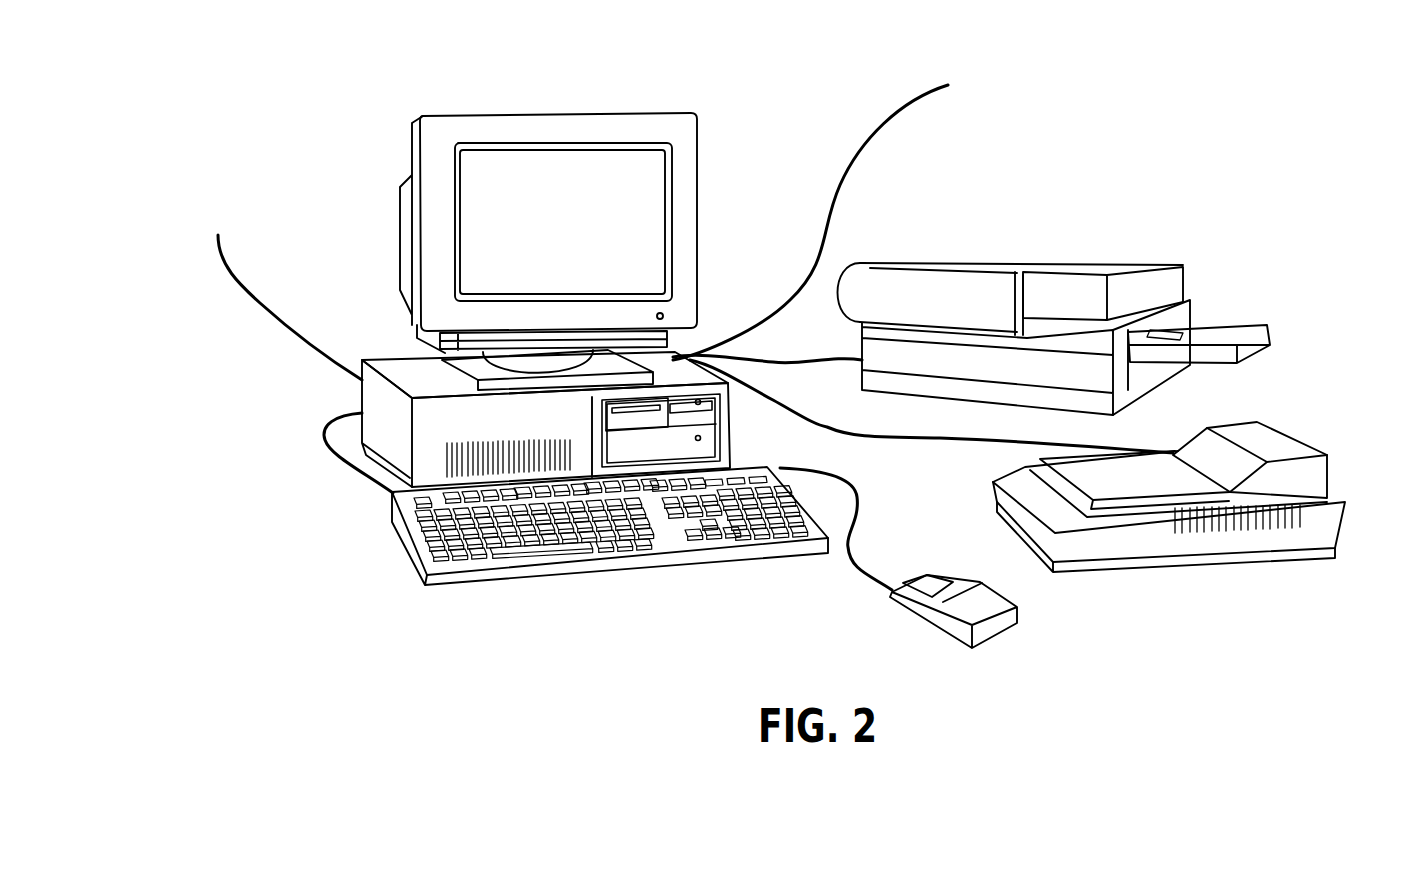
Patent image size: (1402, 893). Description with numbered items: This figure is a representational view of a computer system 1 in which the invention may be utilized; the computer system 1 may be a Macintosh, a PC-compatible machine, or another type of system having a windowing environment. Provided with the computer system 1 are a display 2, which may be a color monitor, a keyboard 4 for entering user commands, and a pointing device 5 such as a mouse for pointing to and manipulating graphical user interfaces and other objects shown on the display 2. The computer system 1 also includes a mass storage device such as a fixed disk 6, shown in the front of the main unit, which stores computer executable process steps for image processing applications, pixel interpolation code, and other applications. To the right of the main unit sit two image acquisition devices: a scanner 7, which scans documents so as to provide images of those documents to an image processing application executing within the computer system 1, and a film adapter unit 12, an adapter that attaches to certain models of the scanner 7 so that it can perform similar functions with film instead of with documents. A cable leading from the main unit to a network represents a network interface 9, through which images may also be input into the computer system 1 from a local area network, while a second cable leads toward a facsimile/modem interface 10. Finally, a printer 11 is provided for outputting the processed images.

The computer system 1 is at (760, 132).
The display 2 is at (583, 112).
The keyboard 4 is at (490, 558).
The pointing device 5 is at (997, 638).
The fixed disk 6 is at (708, 420).
The scanner 7 is at (1240, 563).
The network interface 9 is at (878, 137).
The facsimile/modem interface cable 10 is at (295, 325).
The printer 11 is at (973, 260).
The film adapter unit 12 is at (1278, 440).